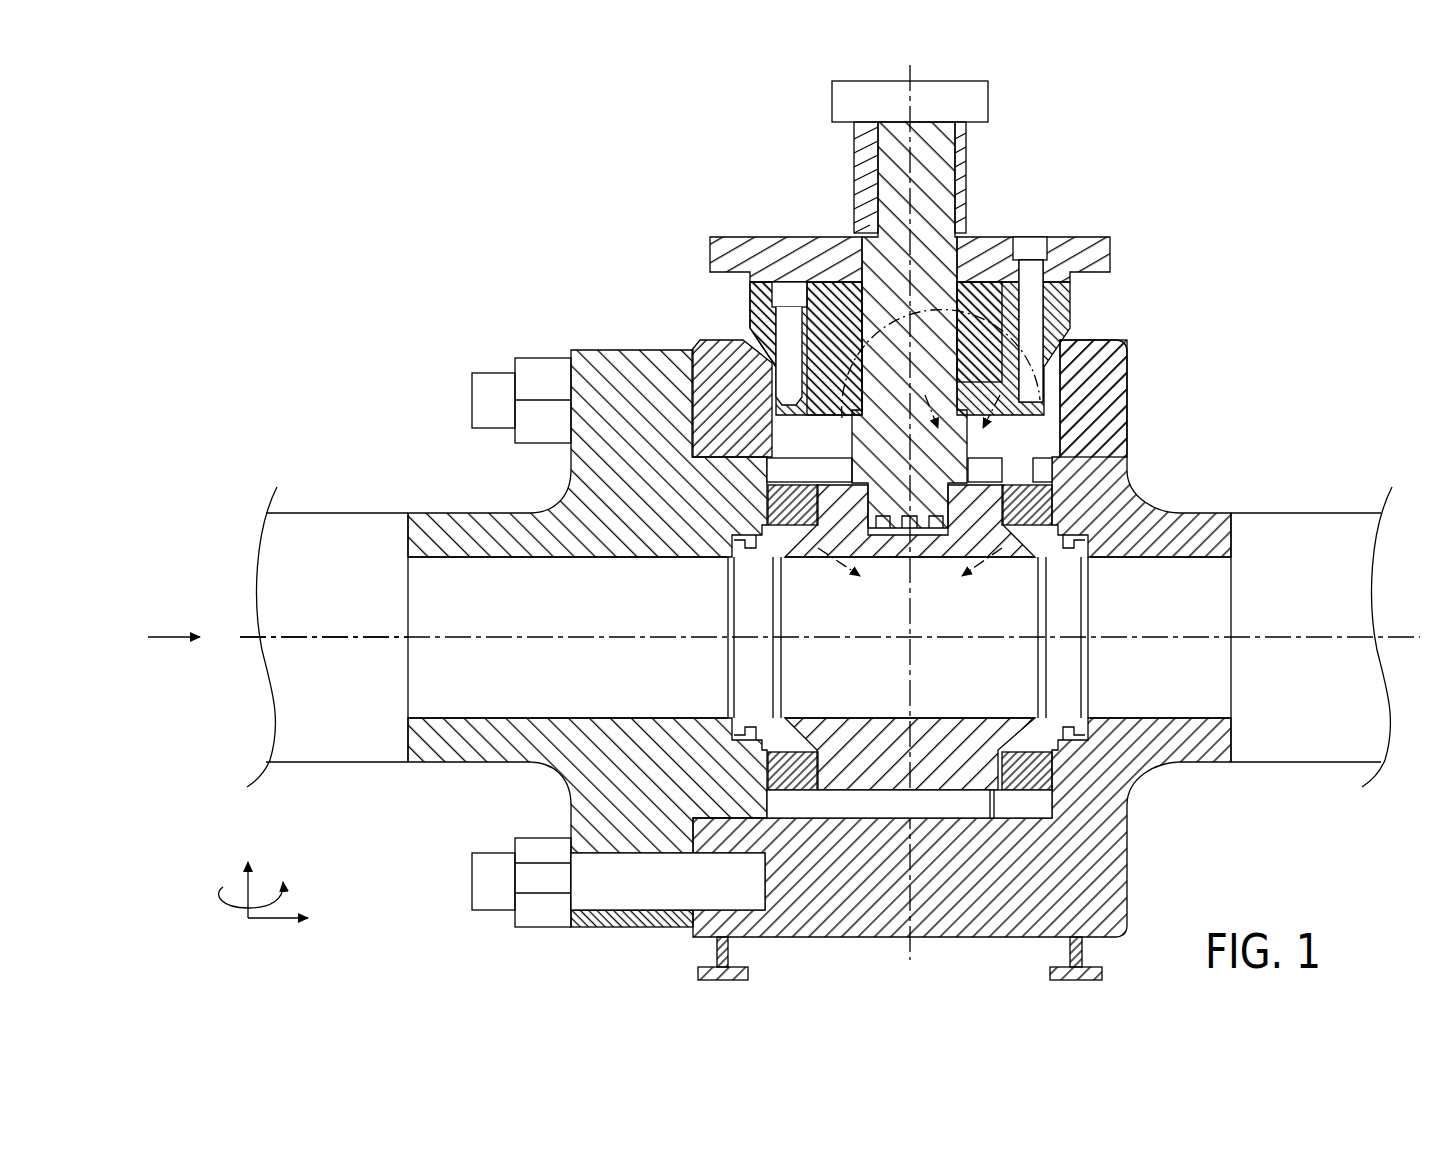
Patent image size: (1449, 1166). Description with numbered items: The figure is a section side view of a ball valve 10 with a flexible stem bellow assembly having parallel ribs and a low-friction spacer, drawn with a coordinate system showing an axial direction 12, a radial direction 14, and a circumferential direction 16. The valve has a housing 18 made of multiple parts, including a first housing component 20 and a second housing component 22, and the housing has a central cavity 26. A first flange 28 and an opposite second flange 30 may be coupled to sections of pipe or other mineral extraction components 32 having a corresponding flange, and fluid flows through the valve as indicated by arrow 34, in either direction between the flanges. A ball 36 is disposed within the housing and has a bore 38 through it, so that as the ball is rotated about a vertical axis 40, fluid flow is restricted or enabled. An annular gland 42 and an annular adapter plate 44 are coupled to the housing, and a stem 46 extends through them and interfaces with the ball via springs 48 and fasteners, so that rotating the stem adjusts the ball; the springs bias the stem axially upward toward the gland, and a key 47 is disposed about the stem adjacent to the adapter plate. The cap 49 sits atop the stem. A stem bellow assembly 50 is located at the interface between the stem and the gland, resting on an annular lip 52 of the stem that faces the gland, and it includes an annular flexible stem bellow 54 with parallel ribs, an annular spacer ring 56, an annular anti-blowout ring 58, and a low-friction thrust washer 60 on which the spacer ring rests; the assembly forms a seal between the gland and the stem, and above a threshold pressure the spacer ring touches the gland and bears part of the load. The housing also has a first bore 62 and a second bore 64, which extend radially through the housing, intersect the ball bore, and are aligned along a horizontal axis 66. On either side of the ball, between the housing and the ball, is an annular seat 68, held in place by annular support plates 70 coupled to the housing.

The valve 10 is at (768, 523).
The axial direction 12 is at (252, 888).
The radial direction 14 is at (272, 920).
The circumferential direction 16 is at (226, 904).
The housing 18 is at (748, 660).
The first housing component 20 is at (615, 835).
The second housing component 22 is at (1103, 866).
The central cavity 26 is at (945, 805).
The first flange 28 is at (452, 764).
The second flange 30 is at (1200, 763).
The mineral extraction component 32 is at (302, 722).
The arrow 34 is at (148, 637).
The ball 36 is at (870, 770).
The bore 38 is at (988, 694).
The vertical axis 40 is at (902, 146).
The gland 42 is at (1075, 305).
The adapter plate 44 is at (1110, 256).
The stem 46 is at (925, 122).
The key 47 is at (967, 156).
The springs 48 is at (896, 535).
The cap 49 is at (832, 100).
The stem bellow assembly 50 is at (992, 402).
The annular lip 52 is at (992, 458).
The flexible stem bellow 54 is at (862, 402).
The spacer ring 56 is at (832, 392).
The anti-blowout ring 58 is at (838, 382).
The thrust washer 60 is at (838, 424).
The first bore 62 is at (571, 632).
The second bore 64 is at (1160, 627).
The horizontal axis 66 is at (312, 638).
The seat 68 is at (737, 540).
The support plate 70 is at (1065, 490).